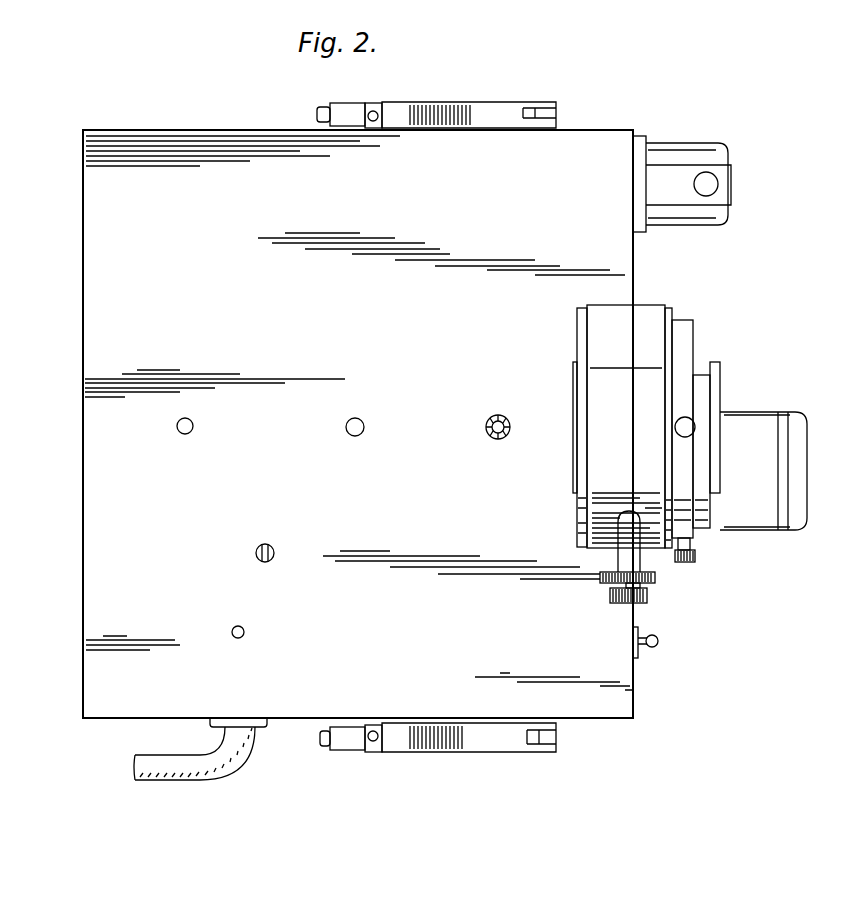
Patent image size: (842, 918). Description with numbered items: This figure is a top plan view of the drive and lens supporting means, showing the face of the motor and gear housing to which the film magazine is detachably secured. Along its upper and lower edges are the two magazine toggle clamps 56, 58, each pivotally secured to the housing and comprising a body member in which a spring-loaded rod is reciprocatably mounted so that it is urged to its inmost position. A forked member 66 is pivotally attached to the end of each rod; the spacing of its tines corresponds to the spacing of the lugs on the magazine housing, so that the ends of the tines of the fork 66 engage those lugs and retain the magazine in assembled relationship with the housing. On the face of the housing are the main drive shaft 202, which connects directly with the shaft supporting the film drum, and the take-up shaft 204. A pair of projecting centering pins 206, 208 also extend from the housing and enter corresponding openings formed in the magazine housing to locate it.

The magazine toggle clamp 58 is at (485, 101).
The magazine toggle clamp 56 is at (462, 753).
The forked member 66 is at (557, 109).
The main drive shaft 202 is at (501, 416).
The take-up shaft 204 is at (274, 548).
The centering pin 206 is at (363, 418).
The centering pin 208 is at (192, 419).